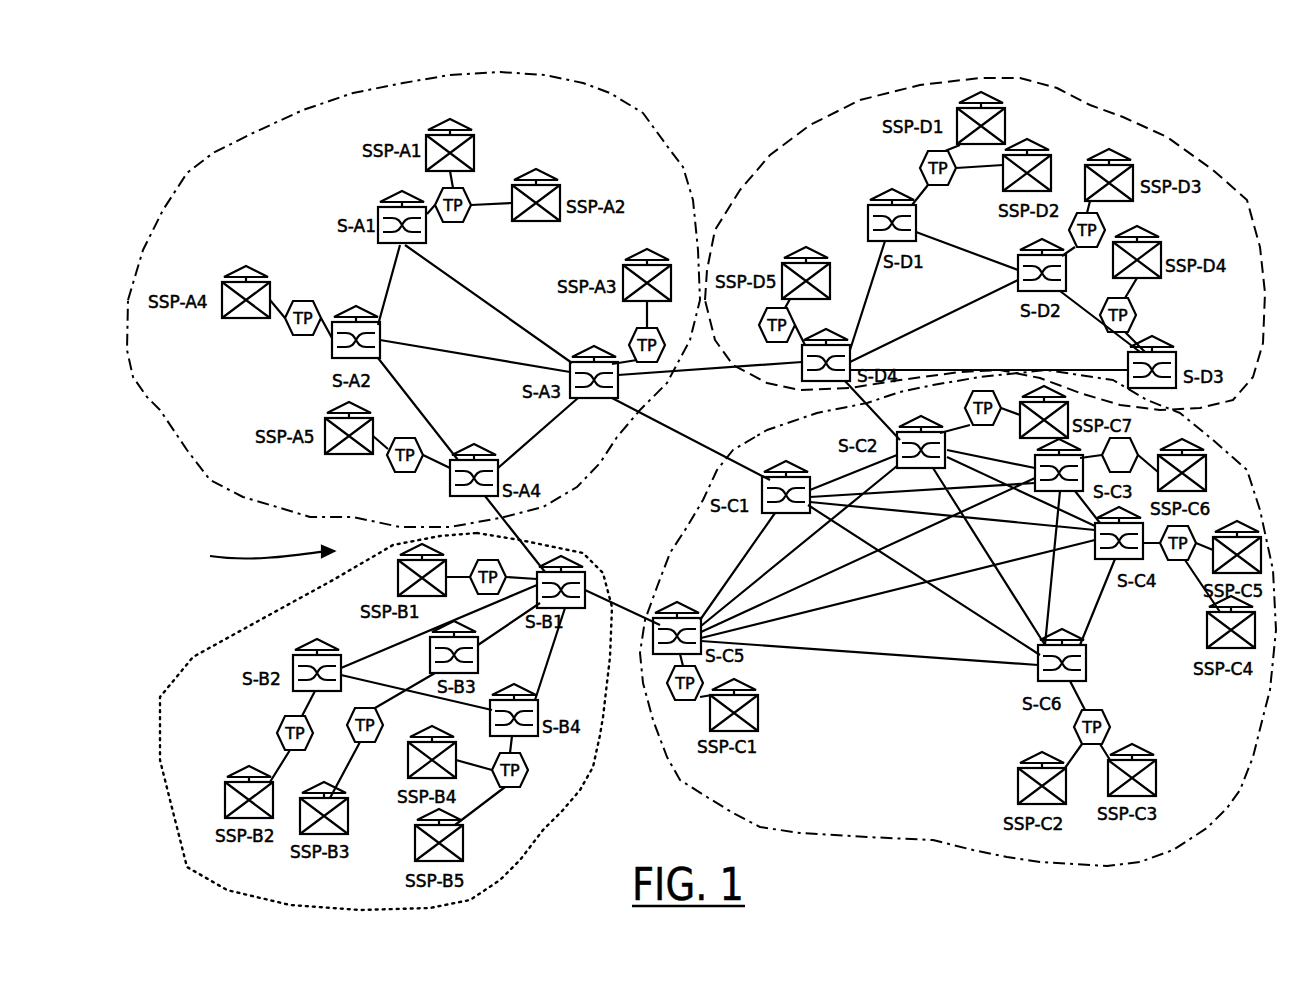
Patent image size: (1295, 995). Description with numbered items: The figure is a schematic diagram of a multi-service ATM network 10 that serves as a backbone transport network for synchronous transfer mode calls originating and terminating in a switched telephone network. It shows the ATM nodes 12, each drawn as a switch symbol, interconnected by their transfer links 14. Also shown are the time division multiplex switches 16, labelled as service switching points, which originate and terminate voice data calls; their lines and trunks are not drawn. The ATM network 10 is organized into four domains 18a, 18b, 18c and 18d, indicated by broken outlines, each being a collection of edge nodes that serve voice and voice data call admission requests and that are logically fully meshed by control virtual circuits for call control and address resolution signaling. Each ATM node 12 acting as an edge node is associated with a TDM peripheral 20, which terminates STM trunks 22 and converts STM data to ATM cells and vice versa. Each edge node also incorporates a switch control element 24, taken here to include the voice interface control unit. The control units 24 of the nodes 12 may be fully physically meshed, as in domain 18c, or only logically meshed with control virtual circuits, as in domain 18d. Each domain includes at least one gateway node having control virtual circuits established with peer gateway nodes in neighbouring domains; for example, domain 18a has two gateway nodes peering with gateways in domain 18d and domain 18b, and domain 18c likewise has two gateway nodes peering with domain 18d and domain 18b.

The ATM network 10 is at (256, 559).
The ATM node 12 is at (693, 457).
The transfer link 14 is at (740, 471).
The time division multiplex switch 16 is at (725, 491).
The domain 18a is at (417, 294).
The domain 18b is at (389, 721).
The domain 18c is at (958, 628).
The domain 18d is at (985, 234).
The TDM peripheral 20 is at (735, 469).
The STM trunk 22 is at (745, 481).
The switch control element 24 is at (722, 458).